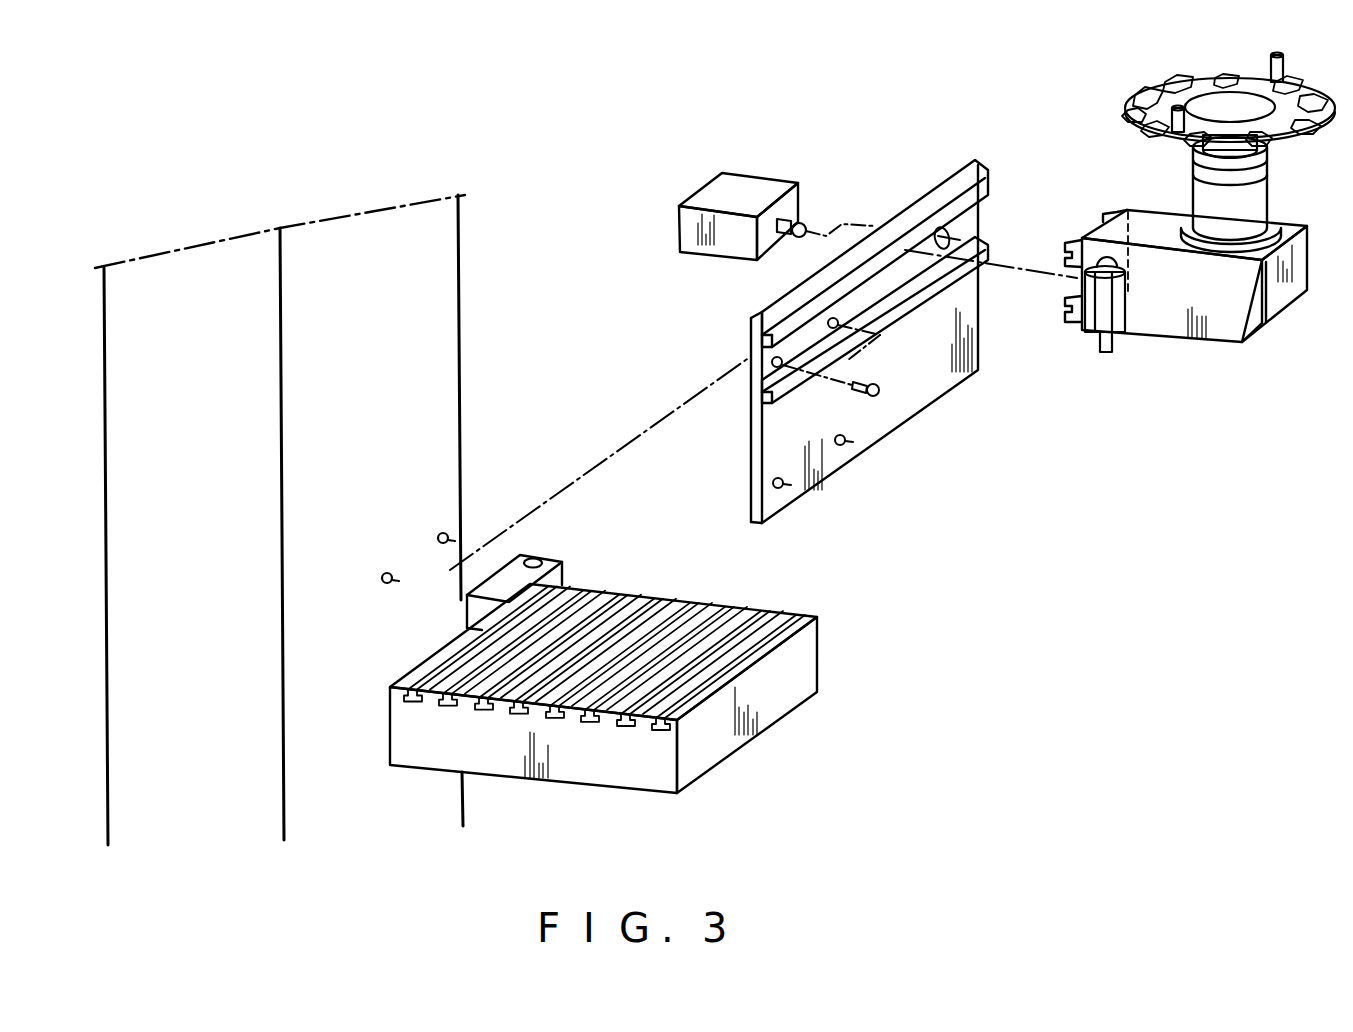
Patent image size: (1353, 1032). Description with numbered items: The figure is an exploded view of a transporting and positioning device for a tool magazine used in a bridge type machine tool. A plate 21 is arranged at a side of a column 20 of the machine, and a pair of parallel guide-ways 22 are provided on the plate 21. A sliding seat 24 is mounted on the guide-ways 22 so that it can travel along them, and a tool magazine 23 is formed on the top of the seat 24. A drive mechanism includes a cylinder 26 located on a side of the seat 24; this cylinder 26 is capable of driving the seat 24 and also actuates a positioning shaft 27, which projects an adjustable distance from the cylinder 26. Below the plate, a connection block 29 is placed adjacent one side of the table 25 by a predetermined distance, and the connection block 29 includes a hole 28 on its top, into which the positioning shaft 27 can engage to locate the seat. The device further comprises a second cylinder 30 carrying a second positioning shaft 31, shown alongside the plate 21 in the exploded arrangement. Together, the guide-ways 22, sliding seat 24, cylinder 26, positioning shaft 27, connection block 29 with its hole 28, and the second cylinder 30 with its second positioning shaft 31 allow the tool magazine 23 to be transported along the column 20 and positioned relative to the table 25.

The column 20 is at (440, 393).
The plate 21 is at (925, 380).
The guide-ways 22 is at (928, 230).
The tool magazine 23 is at (1197, 131).
The sliding seat 24 is at (1230, 315).
The table 25 is at (797, 675).
The cylinder 26 is at (1110, 313).
The positioning shaft 27 is at (1107, 352).
The hole 28 is at (538, 560).
The connection block 29 is at (563, 570).
The second cylinder 30 is at (753, 192).
The second positioning shaft 31 is at (800, 222).